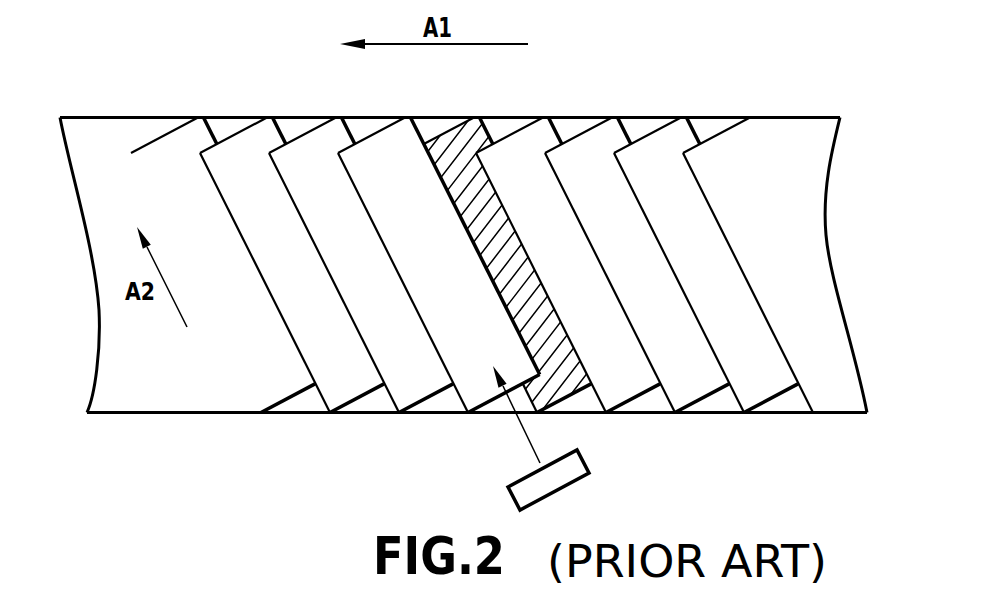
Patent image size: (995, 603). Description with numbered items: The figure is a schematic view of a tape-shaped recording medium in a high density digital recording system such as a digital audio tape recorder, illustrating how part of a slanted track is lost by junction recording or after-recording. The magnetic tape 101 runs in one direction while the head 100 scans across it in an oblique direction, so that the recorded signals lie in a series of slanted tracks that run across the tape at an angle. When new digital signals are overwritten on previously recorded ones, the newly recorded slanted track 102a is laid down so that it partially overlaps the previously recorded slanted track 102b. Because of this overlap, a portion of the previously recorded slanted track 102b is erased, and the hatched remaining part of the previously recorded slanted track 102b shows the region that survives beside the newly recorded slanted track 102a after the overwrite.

The head 100 is at (585, 462).
The magnetic tape 101 is at (820, 245).
The newly recorded slanted track 102a is at (397, 138).
The previously recorded slanted track 102b is at (488, 122).